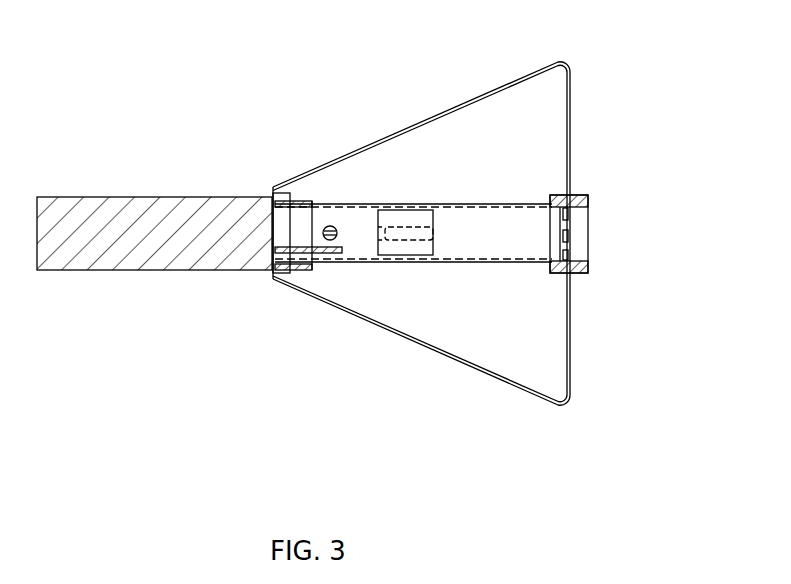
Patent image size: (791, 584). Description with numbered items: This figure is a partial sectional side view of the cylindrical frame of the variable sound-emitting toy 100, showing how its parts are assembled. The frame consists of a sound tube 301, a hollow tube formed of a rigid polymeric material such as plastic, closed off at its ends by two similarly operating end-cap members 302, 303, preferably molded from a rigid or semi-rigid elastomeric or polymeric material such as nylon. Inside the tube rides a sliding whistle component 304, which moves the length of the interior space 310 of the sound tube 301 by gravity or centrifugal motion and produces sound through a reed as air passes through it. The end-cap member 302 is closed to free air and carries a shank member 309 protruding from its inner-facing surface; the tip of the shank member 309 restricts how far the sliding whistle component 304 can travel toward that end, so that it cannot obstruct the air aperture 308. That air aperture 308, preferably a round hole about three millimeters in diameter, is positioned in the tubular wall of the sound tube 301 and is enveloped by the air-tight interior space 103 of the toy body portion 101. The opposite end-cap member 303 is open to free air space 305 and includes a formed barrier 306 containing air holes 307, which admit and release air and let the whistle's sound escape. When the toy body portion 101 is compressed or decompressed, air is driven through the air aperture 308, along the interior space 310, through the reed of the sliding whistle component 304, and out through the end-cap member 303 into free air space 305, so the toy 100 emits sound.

The toy 100 is at (420, 390).
The toy body portion 101 is at (410, 122).
The interior space 103 is at (517, 339).
The sound tube 301 is at (500, 200).
The end-cap member 302 is at (117, 194).
The end-cap member 303 is at (582, 197).
The sliding whistle component 304 is at (408, 250).
The free air space 305 is at (735, 222).
The formed barrier 306 is at (570, 236).
The air holes 307 is at (570, 220).
The air aperture 308 is at (330, 218).
The shank member 309 is at (330, 260).
The interior space 310 is at (473, 232).